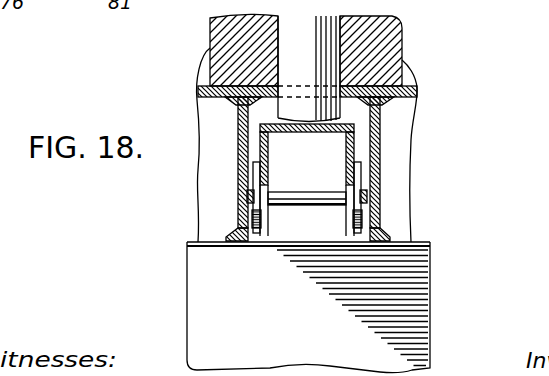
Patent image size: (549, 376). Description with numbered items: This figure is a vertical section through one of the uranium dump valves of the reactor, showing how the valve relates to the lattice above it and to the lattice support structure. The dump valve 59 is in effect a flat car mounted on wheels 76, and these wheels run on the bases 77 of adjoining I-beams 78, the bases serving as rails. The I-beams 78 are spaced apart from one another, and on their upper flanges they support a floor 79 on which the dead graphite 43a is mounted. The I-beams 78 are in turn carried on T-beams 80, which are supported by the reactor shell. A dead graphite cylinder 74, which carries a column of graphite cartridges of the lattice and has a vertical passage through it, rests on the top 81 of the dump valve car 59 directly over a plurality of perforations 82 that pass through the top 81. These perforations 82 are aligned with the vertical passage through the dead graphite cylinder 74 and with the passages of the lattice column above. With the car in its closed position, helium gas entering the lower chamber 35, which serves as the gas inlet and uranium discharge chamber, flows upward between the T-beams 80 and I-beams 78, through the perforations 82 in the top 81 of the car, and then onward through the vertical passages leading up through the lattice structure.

The dead graphite cylinder 74 is at (323, 3).
The dead graphite 43a is at (383, 43).
The floor 79 is at (417, 93).
The top of the dump valve car 81 is at (346, 124).
The I-beam 78 is at (376, 140).
The wheels 76 is at (362, 175).
The lower chamber 35 is at (395, 192).
The dump valve 59 is at (259, 136).
The perforations 82 is at (311, 133).
The base of I-beam 77 is at (253, 239).
The T-beam 80 is at (200, 302).